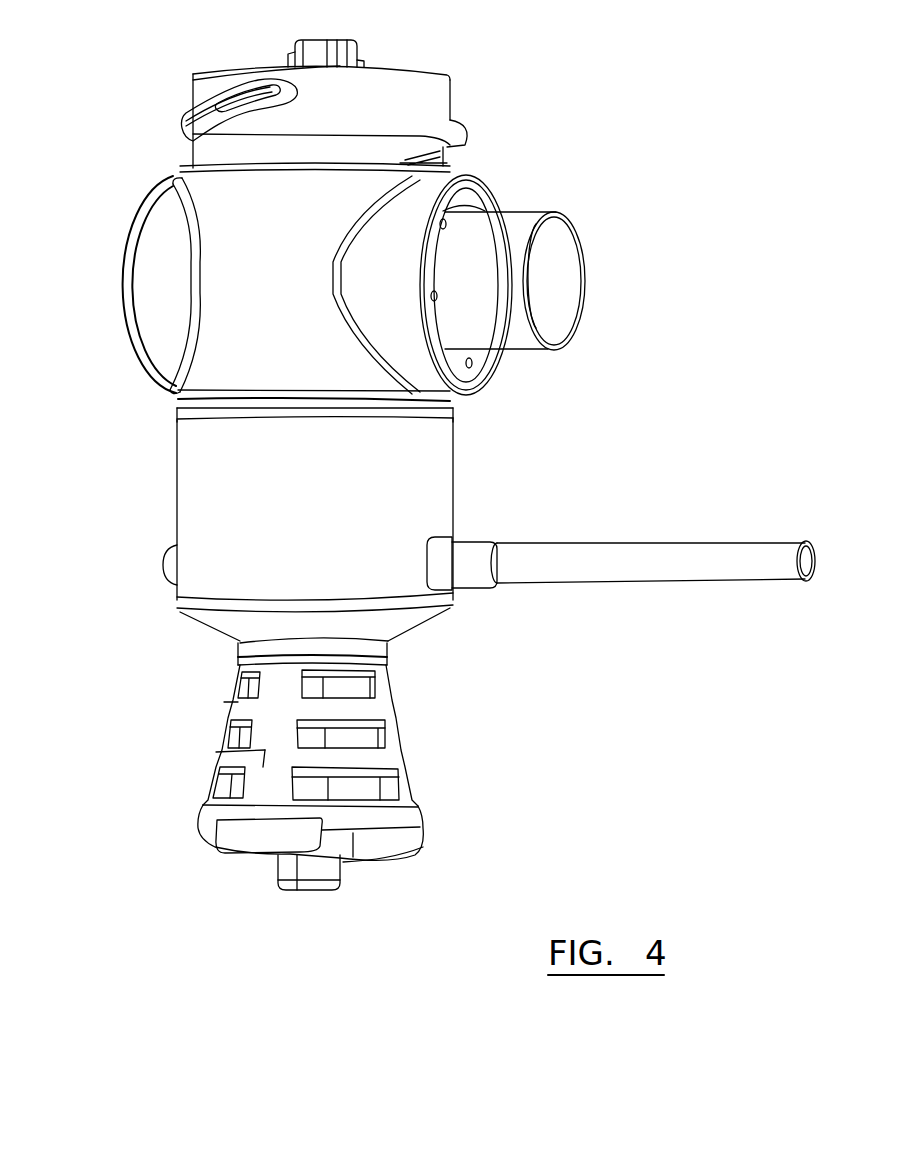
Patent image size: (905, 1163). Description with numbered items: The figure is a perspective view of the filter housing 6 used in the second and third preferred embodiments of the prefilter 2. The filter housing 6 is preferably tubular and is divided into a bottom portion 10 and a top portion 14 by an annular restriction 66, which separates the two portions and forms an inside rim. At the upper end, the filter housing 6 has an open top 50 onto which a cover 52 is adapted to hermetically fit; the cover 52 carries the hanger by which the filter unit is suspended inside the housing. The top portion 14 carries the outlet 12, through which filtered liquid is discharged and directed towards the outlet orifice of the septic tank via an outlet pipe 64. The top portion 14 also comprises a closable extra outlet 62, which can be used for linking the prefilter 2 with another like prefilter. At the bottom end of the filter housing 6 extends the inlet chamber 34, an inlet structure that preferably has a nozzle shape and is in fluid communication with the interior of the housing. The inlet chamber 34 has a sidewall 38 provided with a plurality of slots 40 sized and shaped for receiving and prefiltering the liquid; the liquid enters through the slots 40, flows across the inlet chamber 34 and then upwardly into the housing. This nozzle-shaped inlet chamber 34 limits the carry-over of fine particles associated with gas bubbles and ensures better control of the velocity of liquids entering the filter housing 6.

The prefilter 2 is at (132, 61).
The filter housing 6 is at (277, 265).
The bottom portion 10 is at (422, 478).
The outlet 12 is at (532, 285).
The top portion 14 is at (212, 324).
The inlet chamber 34 is at (313, 766).
The sidewall 38 is at (220, 751).
The slots 40 is at (358, 738).
The open top 50 is at (442, 157).
The cover 52 is at (440, 90).
The closable extra outlet 62 is at (108, 286).
The outlet pipe 64 is at (520, 213).
The annular restriction 66 is at (187, 400).